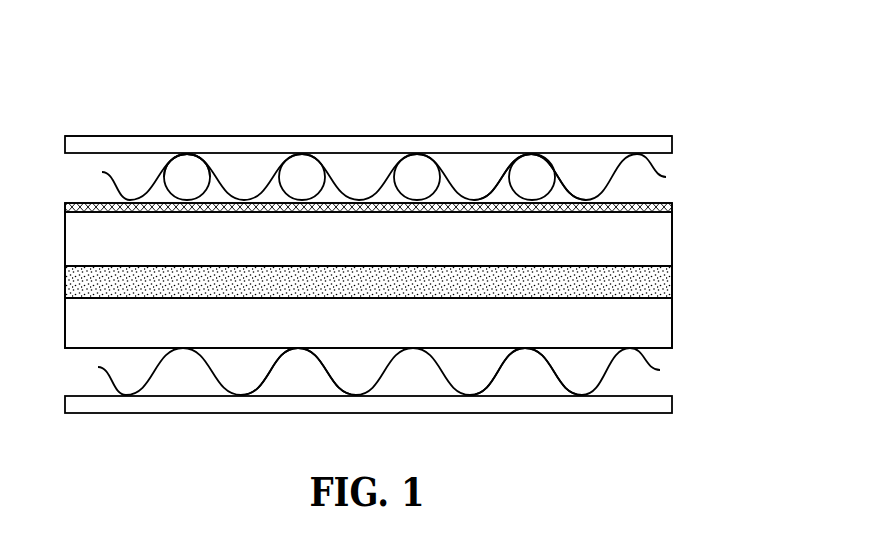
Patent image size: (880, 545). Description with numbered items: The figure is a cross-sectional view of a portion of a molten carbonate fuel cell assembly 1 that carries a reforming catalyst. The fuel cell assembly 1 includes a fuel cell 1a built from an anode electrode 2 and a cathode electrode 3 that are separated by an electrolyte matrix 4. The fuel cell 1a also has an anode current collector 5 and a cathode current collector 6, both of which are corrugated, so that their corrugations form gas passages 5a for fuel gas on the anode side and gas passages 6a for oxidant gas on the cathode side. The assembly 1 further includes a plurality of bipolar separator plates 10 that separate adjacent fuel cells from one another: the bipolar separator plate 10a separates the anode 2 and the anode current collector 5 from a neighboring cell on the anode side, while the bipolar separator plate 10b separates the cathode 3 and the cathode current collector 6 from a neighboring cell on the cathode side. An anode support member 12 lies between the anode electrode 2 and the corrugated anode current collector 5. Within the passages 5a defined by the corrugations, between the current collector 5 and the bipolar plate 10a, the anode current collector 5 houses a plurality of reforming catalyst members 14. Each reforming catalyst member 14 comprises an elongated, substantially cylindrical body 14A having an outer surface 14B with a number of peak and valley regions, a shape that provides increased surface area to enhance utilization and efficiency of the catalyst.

The fuel cell assembly 1 is at (462, 72).
The fuel cell 1a is at (733, 245).
The anode electrode 2 is at (660, 235).
The cathode electrode 3 is at (643, 332).
The electrolyte matrix 4 is at (652, 282).
The anode current collector 5 is at (660, 170).
The gas passages 5a is at (475, 168).
The cathode current collector 6 is at (657, 372).
The gas passages 6a is at (307, 377).
The bipolar separator plates 10 is at (607, 143).
The bipolar separator plate 10a is at (245, 143).
The bipolar separator plate 10b is at (657, 402).
The anode support member 12 is at (83, 203).
The reforming catalyst members 14 is at (195, 135).
The elongated body 14A is at (180, 170).
The outer surface 14B is at (157, 185).